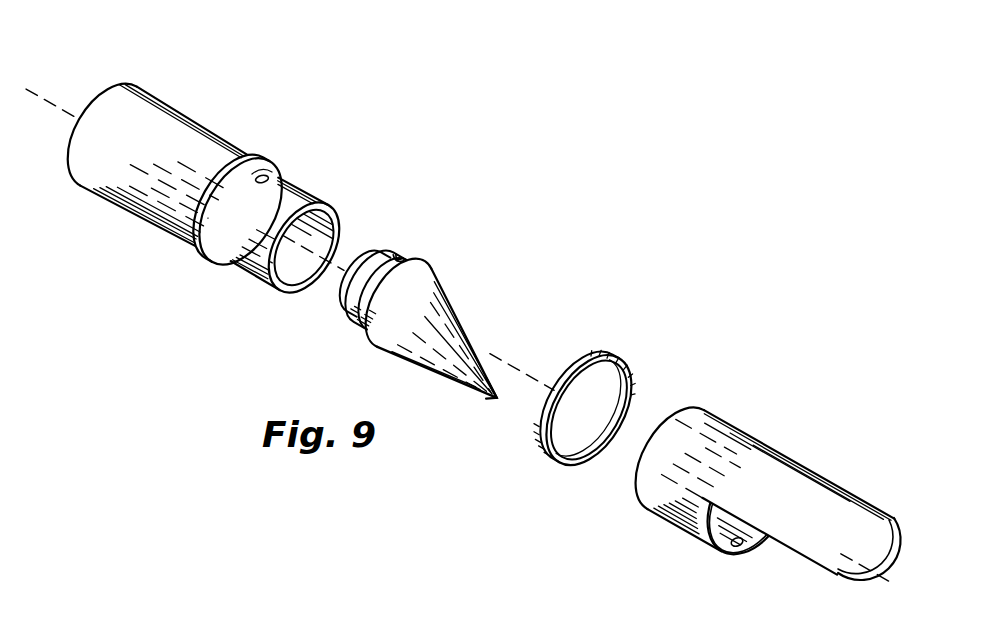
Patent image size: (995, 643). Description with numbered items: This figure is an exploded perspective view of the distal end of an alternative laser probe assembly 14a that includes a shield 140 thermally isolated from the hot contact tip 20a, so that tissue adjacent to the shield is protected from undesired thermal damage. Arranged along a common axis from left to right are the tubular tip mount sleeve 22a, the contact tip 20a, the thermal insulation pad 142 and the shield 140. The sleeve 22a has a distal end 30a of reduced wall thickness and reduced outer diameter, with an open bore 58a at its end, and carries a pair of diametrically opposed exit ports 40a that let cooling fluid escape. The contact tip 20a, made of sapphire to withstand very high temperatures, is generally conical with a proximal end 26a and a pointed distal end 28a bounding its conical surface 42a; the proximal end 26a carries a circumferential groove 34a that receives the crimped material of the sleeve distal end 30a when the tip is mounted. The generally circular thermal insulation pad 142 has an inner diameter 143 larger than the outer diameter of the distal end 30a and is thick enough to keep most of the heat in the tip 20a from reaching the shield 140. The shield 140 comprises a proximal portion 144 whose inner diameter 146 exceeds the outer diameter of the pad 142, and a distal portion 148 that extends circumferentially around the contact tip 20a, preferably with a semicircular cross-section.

The probe assembly 14a is at (718, 216).
The tip mount sleeve 22a is at (200, 105).
The distal end of the tip mount sleeve 30a is at (242, 272).
The bore 58a is at (290, 278).
The exit port 40a is at (264, 178).
The proximal end of the contact tip body 26a is at (359, 345).
The circumferential groove 34a is at (395, 255).
The contact tip 20a is at (474, 289).
The distal end of the contact tip body 28a is at (505, 371).
The conical surface 42a is at (428, 374).
The thermal insulation pad 142 is at (632, 358).
The inner diameter of the thermal insulation pad 143 is at (585, 453).
The shield 140 is at (786, 438).
The distal portion of the shield 148 is at (848, 503).
The proximal portion of the shield 144 is at (672, 513).
The inner diameter of the shield proximal portion 146 is at (742, 551).